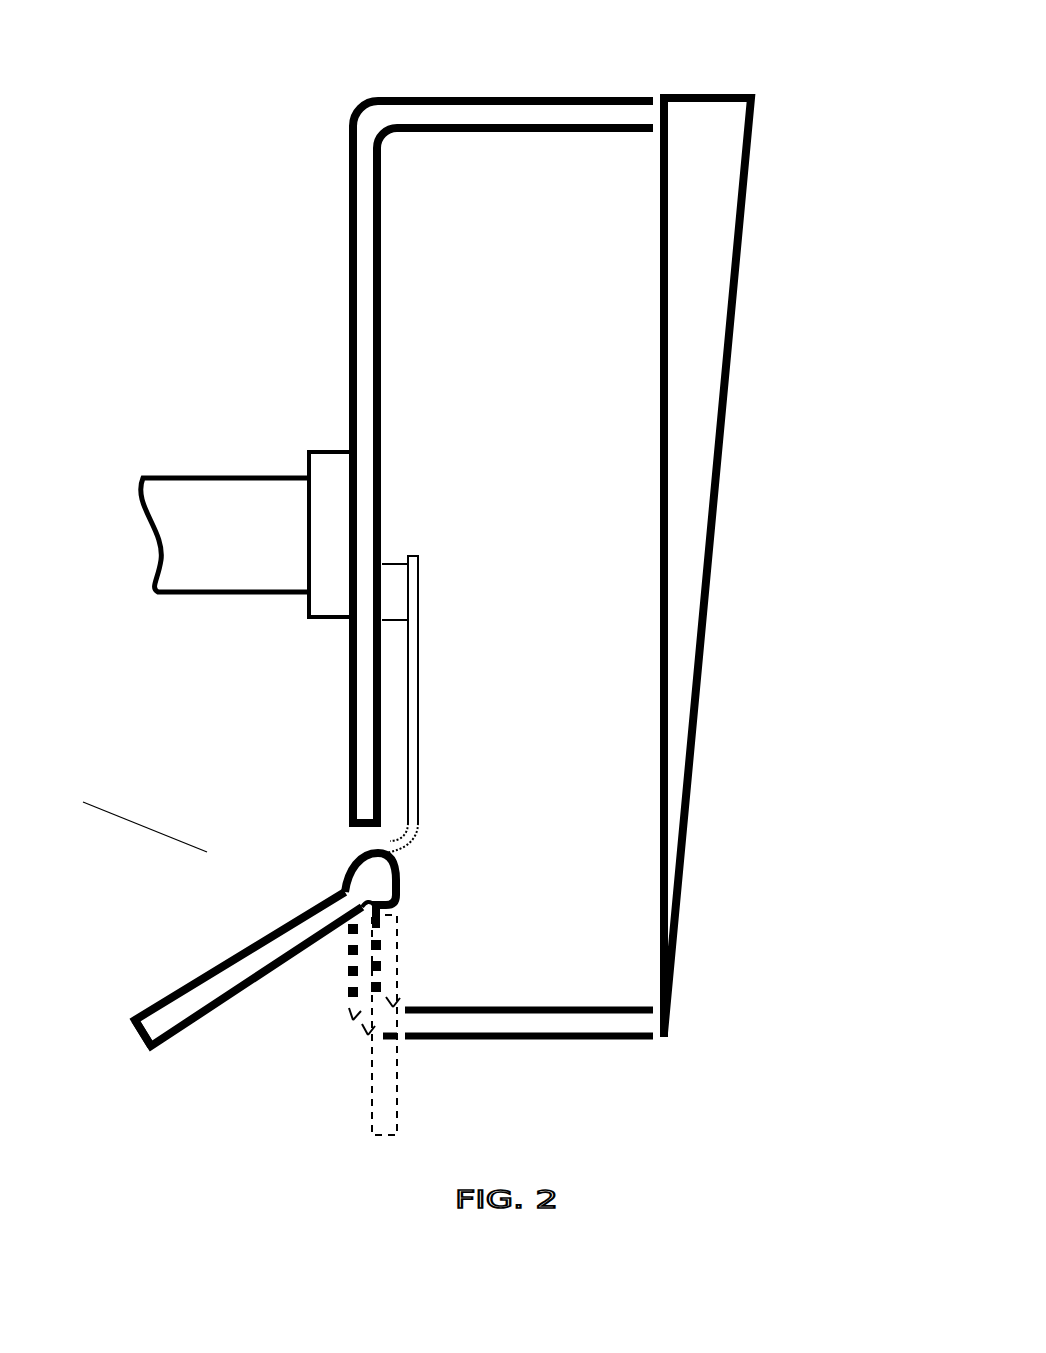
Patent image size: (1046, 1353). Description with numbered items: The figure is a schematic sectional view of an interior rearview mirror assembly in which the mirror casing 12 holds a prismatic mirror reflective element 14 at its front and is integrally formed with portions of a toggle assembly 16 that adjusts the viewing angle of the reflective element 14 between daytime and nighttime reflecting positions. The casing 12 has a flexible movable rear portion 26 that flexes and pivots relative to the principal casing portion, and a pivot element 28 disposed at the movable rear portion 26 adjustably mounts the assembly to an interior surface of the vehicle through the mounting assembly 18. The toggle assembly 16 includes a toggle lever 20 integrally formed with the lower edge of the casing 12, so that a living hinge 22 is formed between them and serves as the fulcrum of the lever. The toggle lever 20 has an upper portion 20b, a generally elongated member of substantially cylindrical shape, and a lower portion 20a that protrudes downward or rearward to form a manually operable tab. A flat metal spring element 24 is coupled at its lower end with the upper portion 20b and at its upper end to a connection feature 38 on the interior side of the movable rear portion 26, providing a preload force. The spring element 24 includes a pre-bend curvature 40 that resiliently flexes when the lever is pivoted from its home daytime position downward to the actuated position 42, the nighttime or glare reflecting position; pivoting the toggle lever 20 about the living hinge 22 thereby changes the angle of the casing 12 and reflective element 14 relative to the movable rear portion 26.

The mirror casing 12 is at (528, 97).
The prismatic mirror reflective element 14 is at (705, 298).
The toggle assembly 16 is at (207, 852).
The mounting assembly 18 is at (209, 451).
The toggle lever 20 is at (312, 972).
The lower portion 20a is at (172, 1018).
The upper portion 20b is at (397, 868).
The living hinge 22 is at (406, 921).
The spring element 24 is at (413, 728).
The movable rear portion 26 is at (347, 698).
The pivot element 28 is at (332, 462).
The connection feature 38 is at (392, 577).
The pre-bend curvature 40 is at (412, 833).
The actuated position 42 is at (348, 1163).